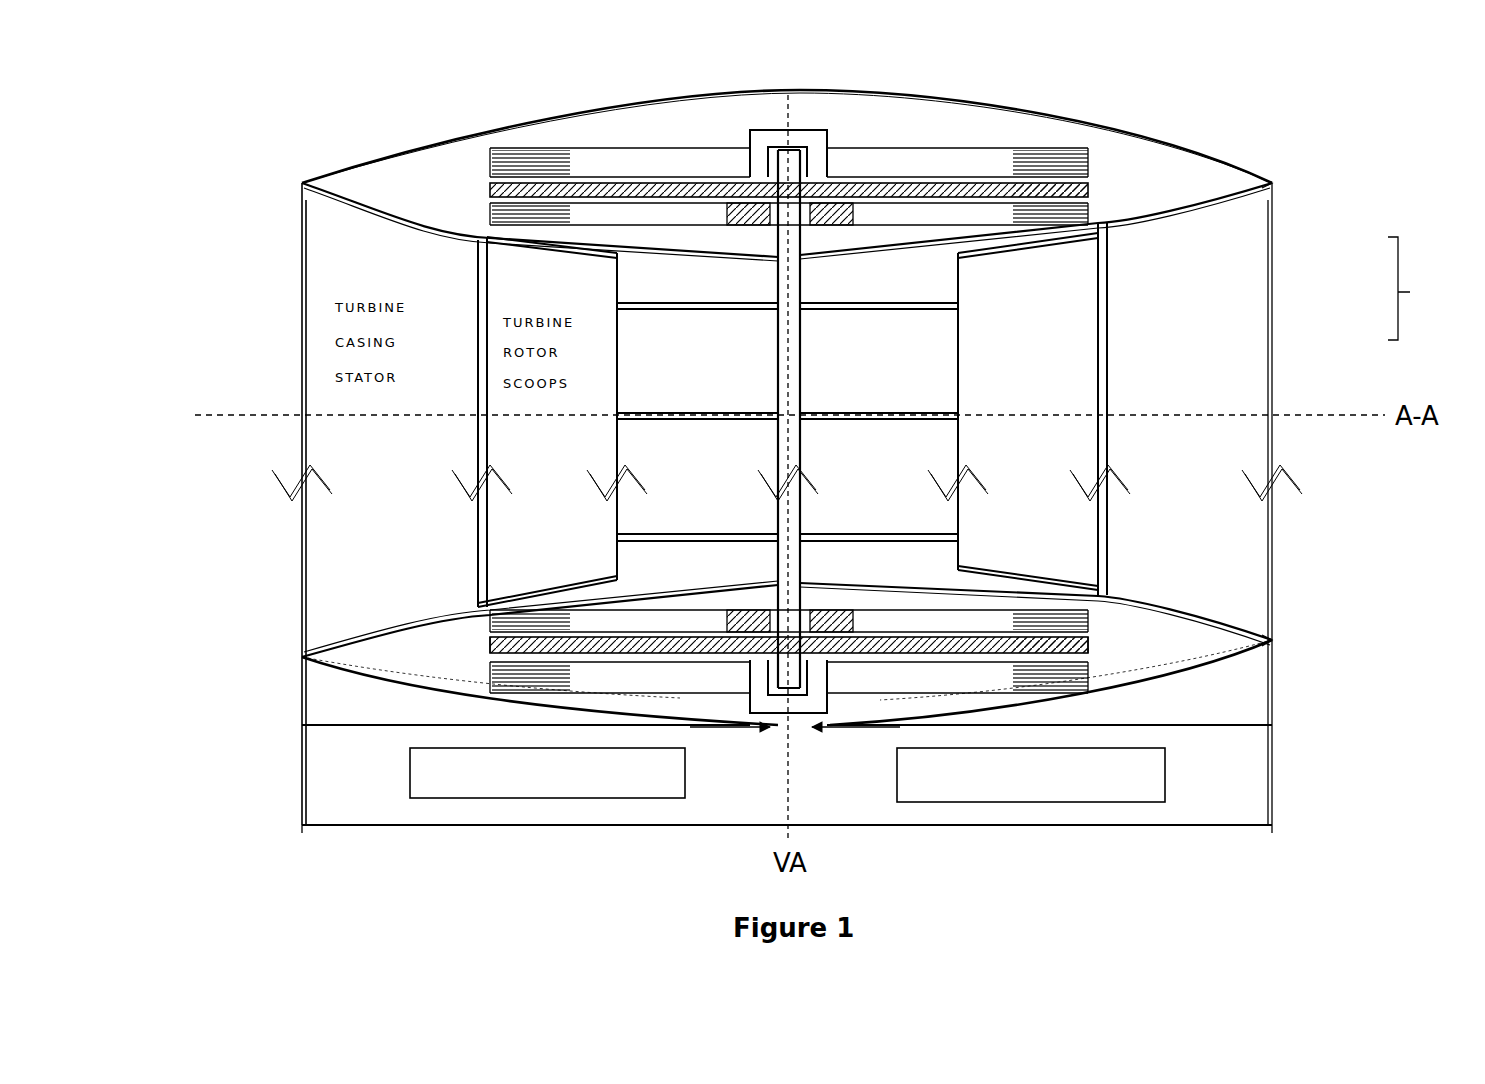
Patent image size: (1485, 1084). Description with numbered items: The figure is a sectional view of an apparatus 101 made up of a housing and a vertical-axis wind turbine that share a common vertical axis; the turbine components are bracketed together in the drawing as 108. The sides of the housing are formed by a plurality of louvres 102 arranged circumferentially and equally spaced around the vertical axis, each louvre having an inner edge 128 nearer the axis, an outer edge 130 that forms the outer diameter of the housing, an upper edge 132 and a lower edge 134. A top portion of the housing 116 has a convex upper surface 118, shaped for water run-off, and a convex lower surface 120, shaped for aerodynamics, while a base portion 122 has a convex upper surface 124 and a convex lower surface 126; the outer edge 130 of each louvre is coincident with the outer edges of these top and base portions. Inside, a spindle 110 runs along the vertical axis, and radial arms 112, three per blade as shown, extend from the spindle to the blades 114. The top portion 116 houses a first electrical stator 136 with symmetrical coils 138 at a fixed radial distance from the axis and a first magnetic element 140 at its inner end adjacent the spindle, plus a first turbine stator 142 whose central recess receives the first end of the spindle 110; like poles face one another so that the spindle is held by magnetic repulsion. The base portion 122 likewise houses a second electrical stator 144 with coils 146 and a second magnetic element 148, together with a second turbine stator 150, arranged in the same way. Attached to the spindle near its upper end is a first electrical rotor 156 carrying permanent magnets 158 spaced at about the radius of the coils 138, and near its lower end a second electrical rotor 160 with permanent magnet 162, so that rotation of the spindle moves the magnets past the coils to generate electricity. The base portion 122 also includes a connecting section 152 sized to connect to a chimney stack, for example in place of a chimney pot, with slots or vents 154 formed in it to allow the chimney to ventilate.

The apparatus 101 is at (166, 338).
The louvres 102 is at (1215, 530).
The rotor assembly 108 is at (1429, 288).
The spindle 110 is at (805, 344).
The radial arms 112 is at (903, 405).
The blades 114 is at (1055, 279).
The top portion of the housing 116 is at (1297, 175).
The convex upper surface 118 is at (1132, 140).
The convex lower surface 120 is at (1230, 203).
The base portion 122 is at (1295, 640).
The convex upper surface 124 is at (1215, 612).
The convex lower surface 126 is at (1237, 665).
The inner edge 128 is at (478, 467).
The outer edge 130 is at (295, 535).
The upper edge 132 is at (377, 215).
The lower edge 134 is at (483, 628).
The first electrical stator 136 is at (605, 146).
The coils 138 is at (487, 188).
The first magnetic element 140 is at (828, 203).
The first turbine stator 142 is at (601, 216).
The second electrical stator 144 is at (948, 627).
The coils 146 is at (483, 686).
The second magnetic element 148 is at (906, 682).
The second turbine stator 150 is at (757, 715).
The connecting section 152 is at (1280, 775).
The slots or vents 154 is at (1068, 800).
The first electrical rotor 156 is at (937, 181).
The permanent magnet 158 is at (487, 148).
The second electrical rotor 160 is at (590, 658).
The permanent magnet 162 is at (490, 657).